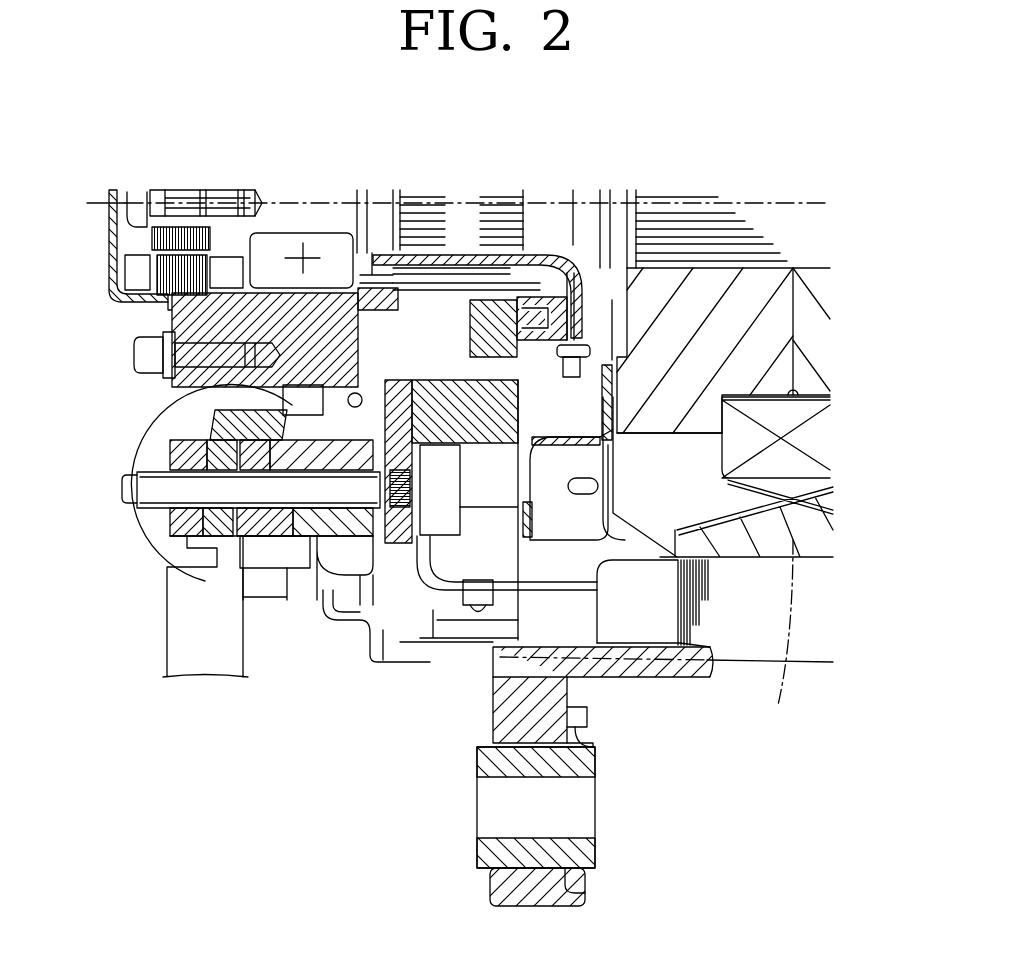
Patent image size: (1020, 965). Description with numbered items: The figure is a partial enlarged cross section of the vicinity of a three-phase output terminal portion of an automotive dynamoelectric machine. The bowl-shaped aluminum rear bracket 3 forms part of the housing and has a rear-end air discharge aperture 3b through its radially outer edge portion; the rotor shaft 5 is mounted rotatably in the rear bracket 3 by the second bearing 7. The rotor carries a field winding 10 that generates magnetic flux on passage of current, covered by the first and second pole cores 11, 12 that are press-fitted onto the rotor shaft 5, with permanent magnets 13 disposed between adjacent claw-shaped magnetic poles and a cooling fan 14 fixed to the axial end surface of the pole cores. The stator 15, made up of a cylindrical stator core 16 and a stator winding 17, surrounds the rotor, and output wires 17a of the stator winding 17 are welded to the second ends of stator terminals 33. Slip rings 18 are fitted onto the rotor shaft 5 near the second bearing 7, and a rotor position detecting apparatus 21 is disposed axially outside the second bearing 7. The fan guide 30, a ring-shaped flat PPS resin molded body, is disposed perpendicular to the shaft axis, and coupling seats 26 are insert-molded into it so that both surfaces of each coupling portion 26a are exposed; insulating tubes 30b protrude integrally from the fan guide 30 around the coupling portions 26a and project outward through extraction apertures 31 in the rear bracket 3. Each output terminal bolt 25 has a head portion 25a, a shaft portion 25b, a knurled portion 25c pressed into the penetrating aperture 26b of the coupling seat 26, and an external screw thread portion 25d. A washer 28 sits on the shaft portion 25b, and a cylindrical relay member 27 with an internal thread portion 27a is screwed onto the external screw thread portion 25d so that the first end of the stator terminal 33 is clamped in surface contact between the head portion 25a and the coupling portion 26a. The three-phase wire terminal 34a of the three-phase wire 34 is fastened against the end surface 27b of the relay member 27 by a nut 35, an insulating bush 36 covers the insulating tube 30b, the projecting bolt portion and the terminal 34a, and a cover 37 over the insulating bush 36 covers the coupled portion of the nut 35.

The rear bracket 3 is at (488, 737).
The rear-end air discharge aperture 3b is at (447, 657).
The rotor shaft 5 is at (684, 213).
The second bearing 7 is at (282, 236).
The field winding 10 is at (815, 438).
The first pole core 11 is at (820, 352).
The second pole core 12 is at (740, 322).
The permanent magnet 13 is at (746, 609).
The cooling fan 14 is at (582, 425).
The stator 15 is at (708, 761).
The stator core 16 is at (733, 637).
The stator winding 17 is at (653, 630).
The output wire 17a is at (560, 600).
The slip ring 18 is at (412, 280).
The rotor position detecting apparatus 21 is at (190, 190).
The output terminal bolt 25 is at (118, 472).
The head portion 25a is at (455, 470).
The shaft portion 25b is at (132, 490).
The knurled portion 25c is at (410, 490).
The external screw thread portion 25d is at (168, 452).
The coupling seat 26 is at (395, 395).
The coupling portion 26a is at (470, 280).
The penetrating aperture 26b is at (383, 590).
The relay member 27 is at (281, 528).
The internal thread portion 27a is at (370, 560).
The end surface 27b is at (222, 555).
The washer 28 is at (165, 360).
The fan guide 30 is at (466, 640).
The insulating tube 30b is at (357, 590).
The extraction aperture 31 is at (345, 393).
The stator terminal 33 is at (443, 655).
The three-phase wire 34 is at (165, 622).
The three-phase wire terminal 34a is at (150, 578).
The nut 35 is at (175, 525).
The insulating bush 36 is at (205, 420).
The cover 37 is at (135, 425).